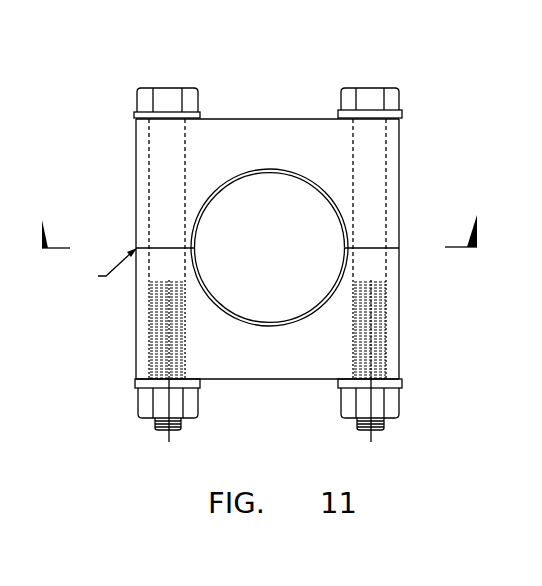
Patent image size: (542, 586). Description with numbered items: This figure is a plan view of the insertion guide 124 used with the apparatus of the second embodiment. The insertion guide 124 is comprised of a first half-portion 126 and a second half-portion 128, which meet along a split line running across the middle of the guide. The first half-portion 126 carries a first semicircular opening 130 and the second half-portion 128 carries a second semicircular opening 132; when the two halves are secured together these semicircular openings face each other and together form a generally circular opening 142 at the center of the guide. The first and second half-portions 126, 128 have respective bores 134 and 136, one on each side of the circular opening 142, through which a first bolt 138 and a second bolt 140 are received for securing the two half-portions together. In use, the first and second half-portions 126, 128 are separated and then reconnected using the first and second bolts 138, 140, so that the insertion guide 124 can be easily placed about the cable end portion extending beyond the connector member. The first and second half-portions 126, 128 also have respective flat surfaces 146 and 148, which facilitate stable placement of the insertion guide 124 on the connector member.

The insertion guide 124 is at (428, 115).
The first half-portion 126 is at (297, 128).
The second half-portion 128 is at (230, 366).
The first semicircular opening 130 is at (247, 196).
The second semicircular opening 132 is at (257, 303).
The bore 134 is at (390, 156).
The bore 136 is at (133, 160).
The first bolt 138 is at (386, 186).
The second bolt 140 is at (150, 190).
The generally circular opening 142 is at (296, 261).
The flat surface 146 is at (257, 128).
The flat surface 148 is at (272, 358).